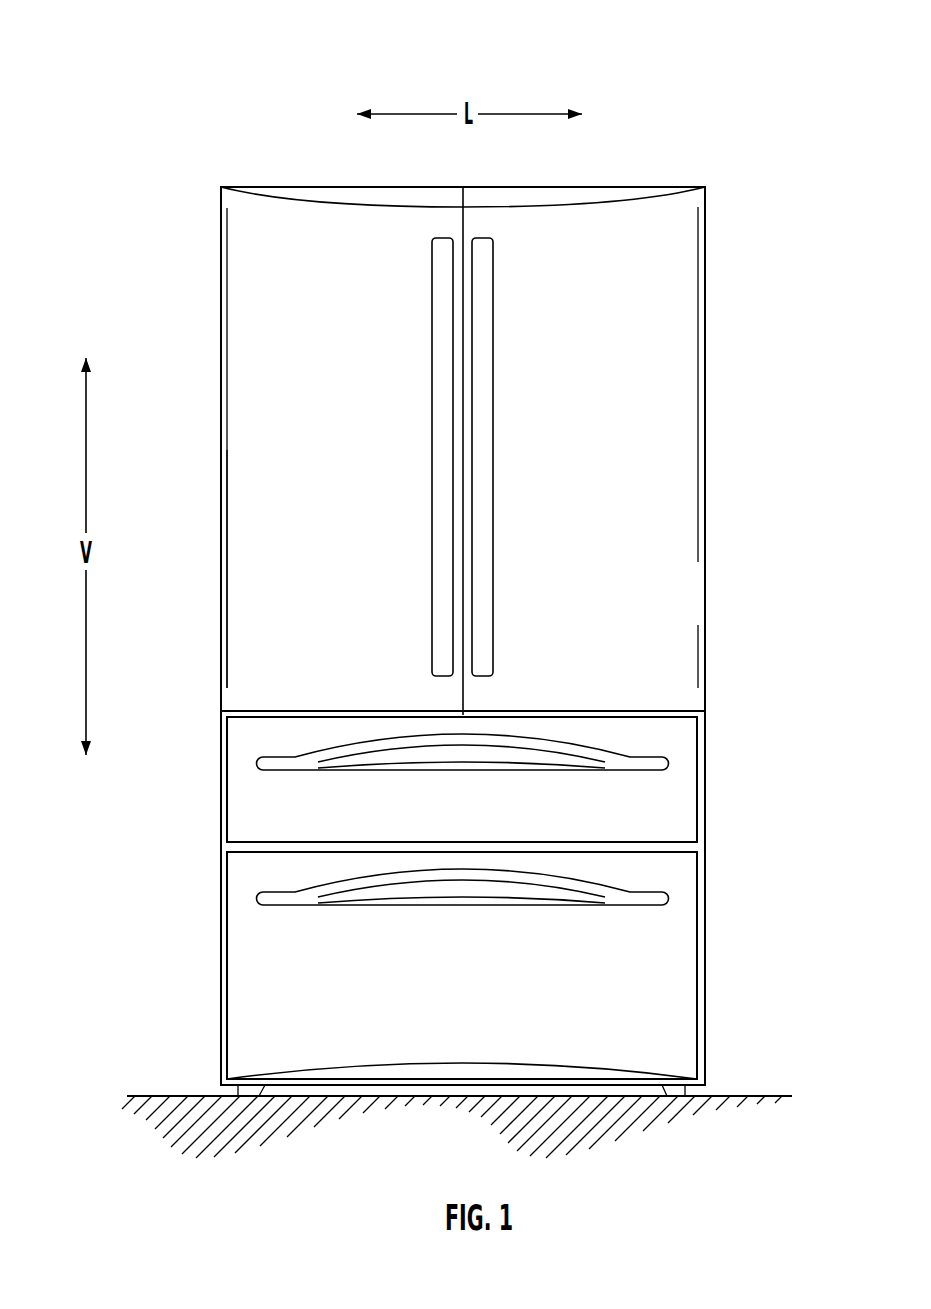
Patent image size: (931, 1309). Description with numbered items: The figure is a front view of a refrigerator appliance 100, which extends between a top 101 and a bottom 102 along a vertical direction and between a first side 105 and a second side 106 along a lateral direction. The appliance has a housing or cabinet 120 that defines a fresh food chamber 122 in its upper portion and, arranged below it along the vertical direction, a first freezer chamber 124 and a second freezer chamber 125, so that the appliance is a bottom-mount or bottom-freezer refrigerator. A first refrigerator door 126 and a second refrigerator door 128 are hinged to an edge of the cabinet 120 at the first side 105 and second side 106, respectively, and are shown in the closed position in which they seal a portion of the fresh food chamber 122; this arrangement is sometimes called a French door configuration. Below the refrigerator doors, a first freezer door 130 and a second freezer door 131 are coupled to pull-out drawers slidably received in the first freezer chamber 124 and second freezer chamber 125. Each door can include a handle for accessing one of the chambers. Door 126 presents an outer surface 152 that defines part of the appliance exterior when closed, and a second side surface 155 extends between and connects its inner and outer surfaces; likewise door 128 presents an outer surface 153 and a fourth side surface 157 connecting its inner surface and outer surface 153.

The refrigerator appliance 100 is at (267, 42).
The top 101 is at (730, 184).
The bottom 102 is at (730, 1081).
The first side 105 is at (224, 160).
The second side 106 is at (697, 160).
The cabinet 120 is at (222, 912).
The fresh food chamber 122 is at (668, 455).
The first freezer chamber 124 is at (668, 814).
The second freezer chamber 125 is at (674, 999).
The first refrigerator door 126 is at (257, 281).
The second refrigerator door 128 is at (673, 284).
The first freezer door 130 is at (660, 737).
The second freezer door 131 is at (668, 879).
The outer surface 152 is at (270, 553).
The outer surface 153 is at (658, 604).
The second side surface 155 is at (221, 428).
The fourth side surface 157 is at (704, 492).